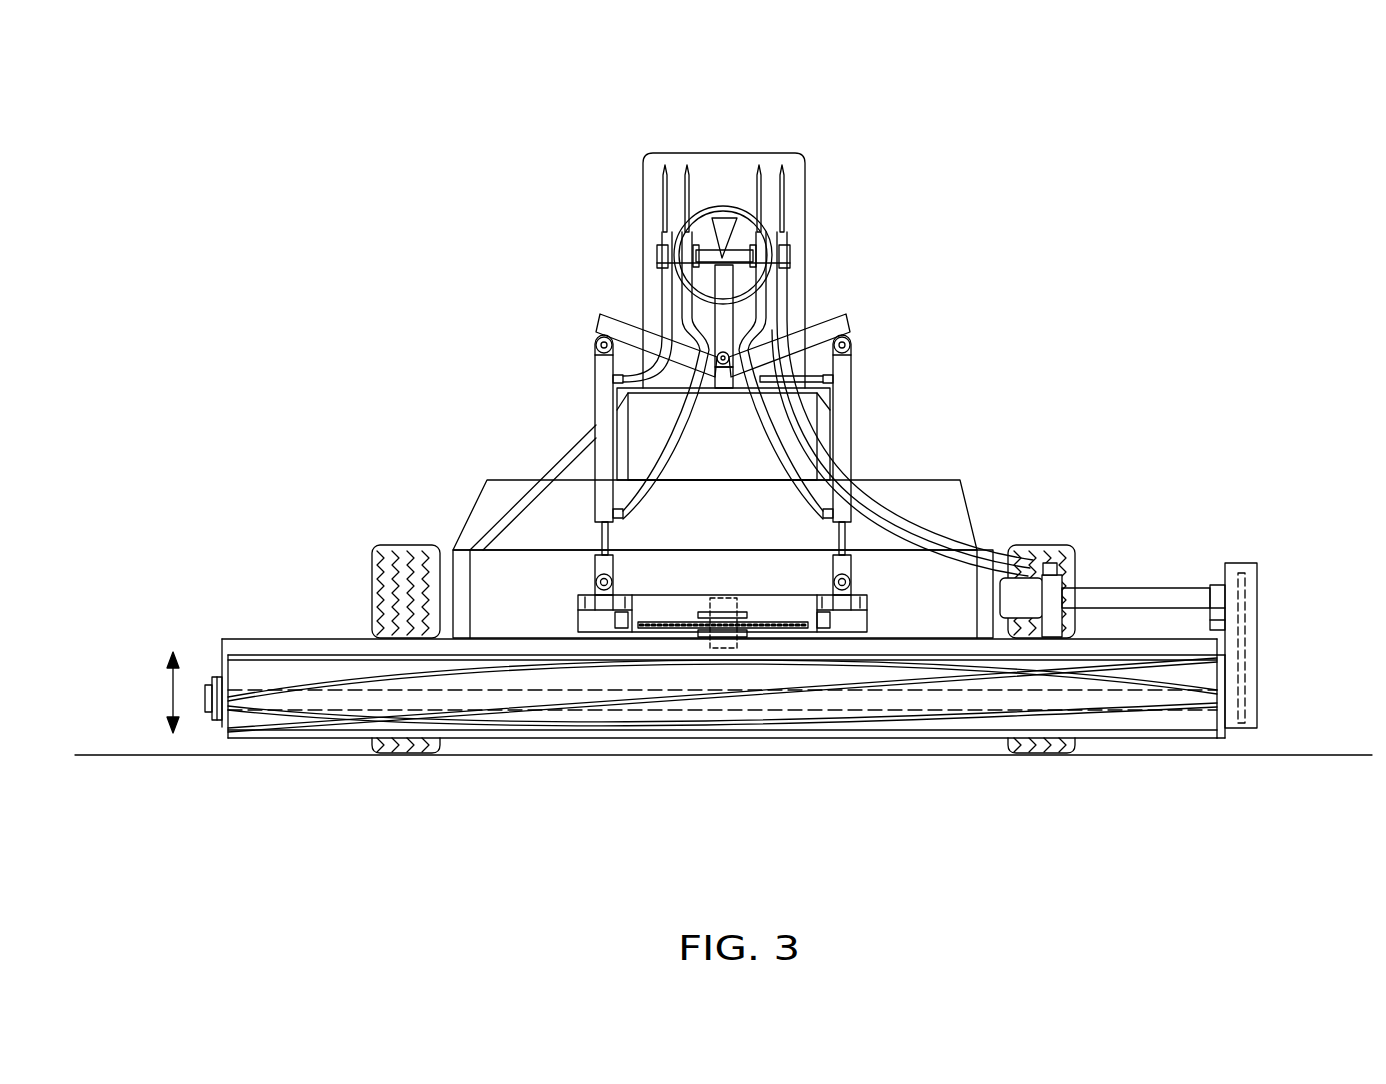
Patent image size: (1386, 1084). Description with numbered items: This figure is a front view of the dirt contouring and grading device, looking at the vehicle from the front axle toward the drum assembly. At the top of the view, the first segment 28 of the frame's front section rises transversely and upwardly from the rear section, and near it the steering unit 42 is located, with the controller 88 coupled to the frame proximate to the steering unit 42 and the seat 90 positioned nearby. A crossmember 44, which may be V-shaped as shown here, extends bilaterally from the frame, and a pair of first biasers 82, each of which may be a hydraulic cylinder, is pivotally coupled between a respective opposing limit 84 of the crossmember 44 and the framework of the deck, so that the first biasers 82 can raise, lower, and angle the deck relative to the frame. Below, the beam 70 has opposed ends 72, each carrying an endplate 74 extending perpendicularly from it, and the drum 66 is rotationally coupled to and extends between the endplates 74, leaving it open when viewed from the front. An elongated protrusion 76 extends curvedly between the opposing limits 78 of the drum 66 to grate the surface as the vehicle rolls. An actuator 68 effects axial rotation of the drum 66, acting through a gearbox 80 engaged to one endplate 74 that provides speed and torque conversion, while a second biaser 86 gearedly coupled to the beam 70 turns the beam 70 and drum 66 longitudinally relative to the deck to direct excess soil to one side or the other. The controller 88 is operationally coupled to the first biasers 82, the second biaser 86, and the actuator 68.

The first segment 28 is at (877, 452).
The steering unit 42 is at (738, 215).
The crossmember 44 is at (808, 342).
The drum 66 is at (1185, 687).
The actuator 68 is at (1053, 605).
The beam 70 is at (313, 645).
The opposed ends 72 is at (1220, 650).
The endplate 74 is at (222, 676).
The protrusion 76 is at (1162, 707).
The opposing limits 78 is at (228, 708).
The gearbox 80 is at (1243, 602).
The first biaser 82 is at (600, 435).
The opposing limit 84 is at (600, 310).
The second biaser 86 is at (722, 633).
The controller 88 is at (782, 167).
The seat 90 is at (565, 458).